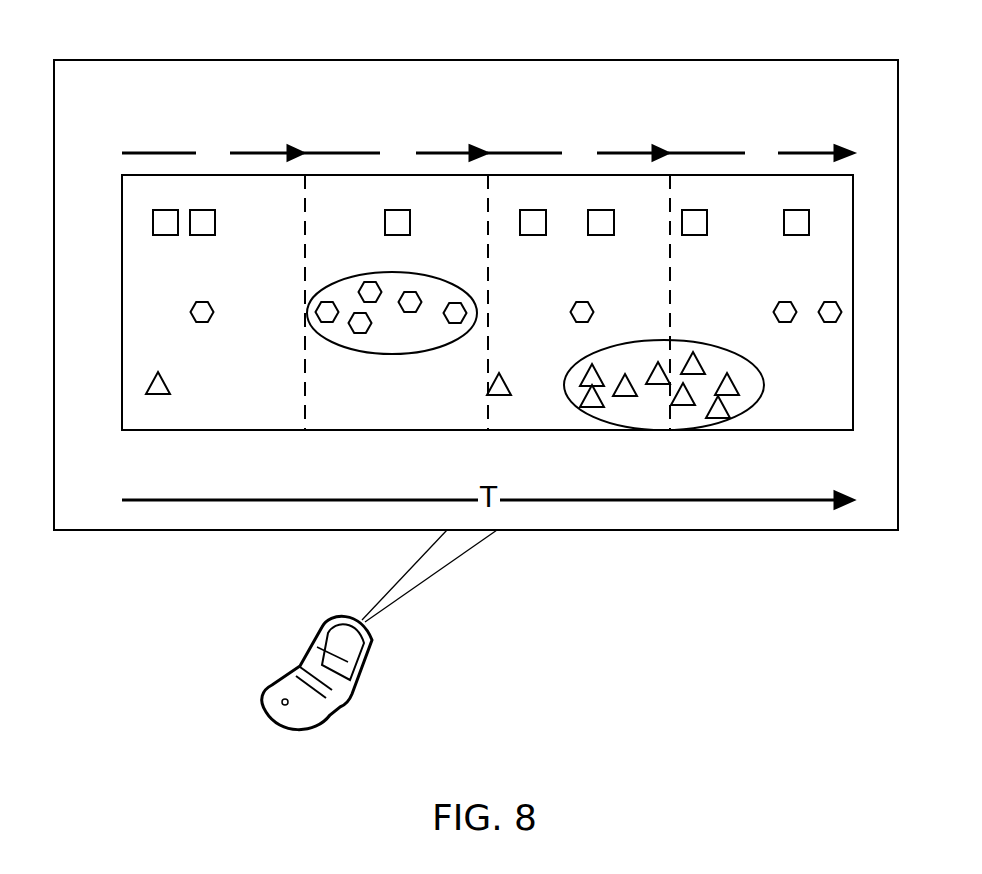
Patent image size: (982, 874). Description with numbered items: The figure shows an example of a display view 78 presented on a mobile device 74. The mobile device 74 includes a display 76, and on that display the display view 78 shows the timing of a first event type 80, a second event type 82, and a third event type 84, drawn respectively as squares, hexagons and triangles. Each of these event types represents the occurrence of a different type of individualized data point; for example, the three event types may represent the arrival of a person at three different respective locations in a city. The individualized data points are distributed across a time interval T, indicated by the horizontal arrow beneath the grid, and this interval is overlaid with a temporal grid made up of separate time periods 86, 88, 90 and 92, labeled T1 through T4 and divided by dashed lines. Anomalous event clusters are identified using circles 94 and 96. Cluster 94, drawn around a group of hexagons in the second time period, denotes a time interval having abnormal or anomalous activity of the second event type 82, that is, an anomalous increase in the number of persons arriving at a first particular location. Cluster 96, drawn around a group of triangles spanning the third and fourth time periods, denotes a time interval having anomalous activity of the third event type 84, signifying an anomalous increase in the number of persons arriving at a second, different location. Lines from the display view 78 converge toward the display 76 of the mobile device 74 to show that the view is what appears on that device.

The mobile device 74 is at (278, 702).
The display 76 is at (342, 637).
The display view 78 is at (460, 60).
The first event type 80 is at (153, 225).
The second event type 82 is at (185, 317).
The third event type 84 is at (147, 383).
The time period 86 is at (213, 133).
The time period 88 is at (395, 132).
The time period 90 is at (572, 132).
The time period 92 is at (767, 132).
The cluster 94 is at (410, 354).
The cluster 96 is at (607, 420).